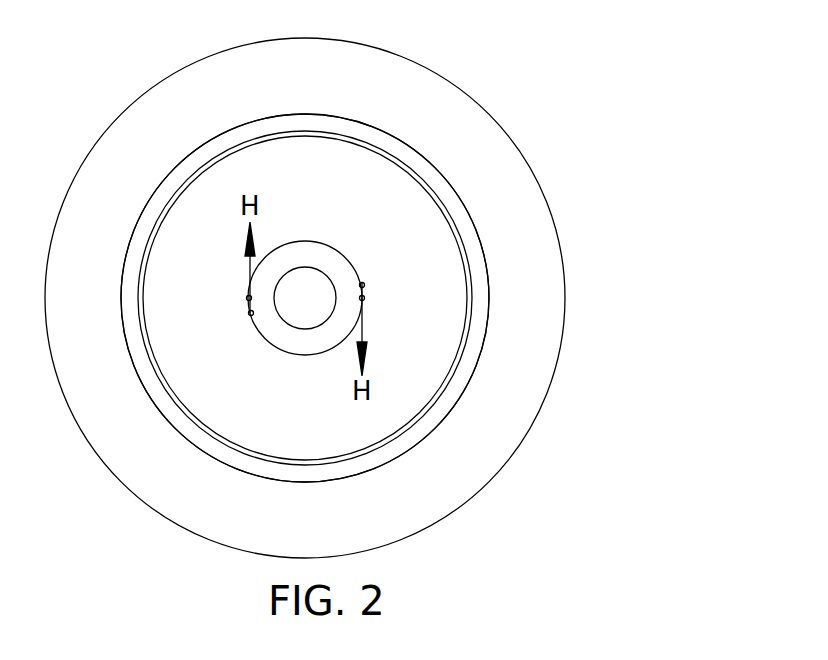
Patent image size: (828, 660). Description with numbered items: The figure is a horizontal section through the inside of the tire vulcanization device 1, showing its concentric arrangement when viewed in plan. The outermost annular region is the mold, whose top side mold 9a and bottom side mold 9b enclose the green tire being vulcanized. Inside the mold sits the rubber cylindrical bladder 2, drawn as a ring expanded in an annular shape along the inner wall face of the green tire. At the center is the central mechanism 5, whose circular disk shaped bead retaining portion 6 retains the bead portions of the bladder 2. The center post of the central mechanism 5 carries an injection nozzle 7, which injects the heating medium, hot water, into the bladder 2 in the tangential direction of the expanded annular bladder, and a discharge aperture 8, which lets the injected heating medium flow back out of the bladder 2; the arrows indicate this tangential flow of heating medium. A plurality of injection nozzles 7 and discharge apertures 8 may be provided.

The tire vulcanization device 1 is at (504, 113).
The bladder 2 is at (457, 267).
The central mechanism 5 is at (338, 248).
The bead retaining portion 6 is at (462, 218).
The injection nozzle 7 is at (245, 298).
The discharge aperture 8 is at (250, 313).
The top side mold 9a is at (417, 298).
The bottom side mold 9b is at (305, 298).